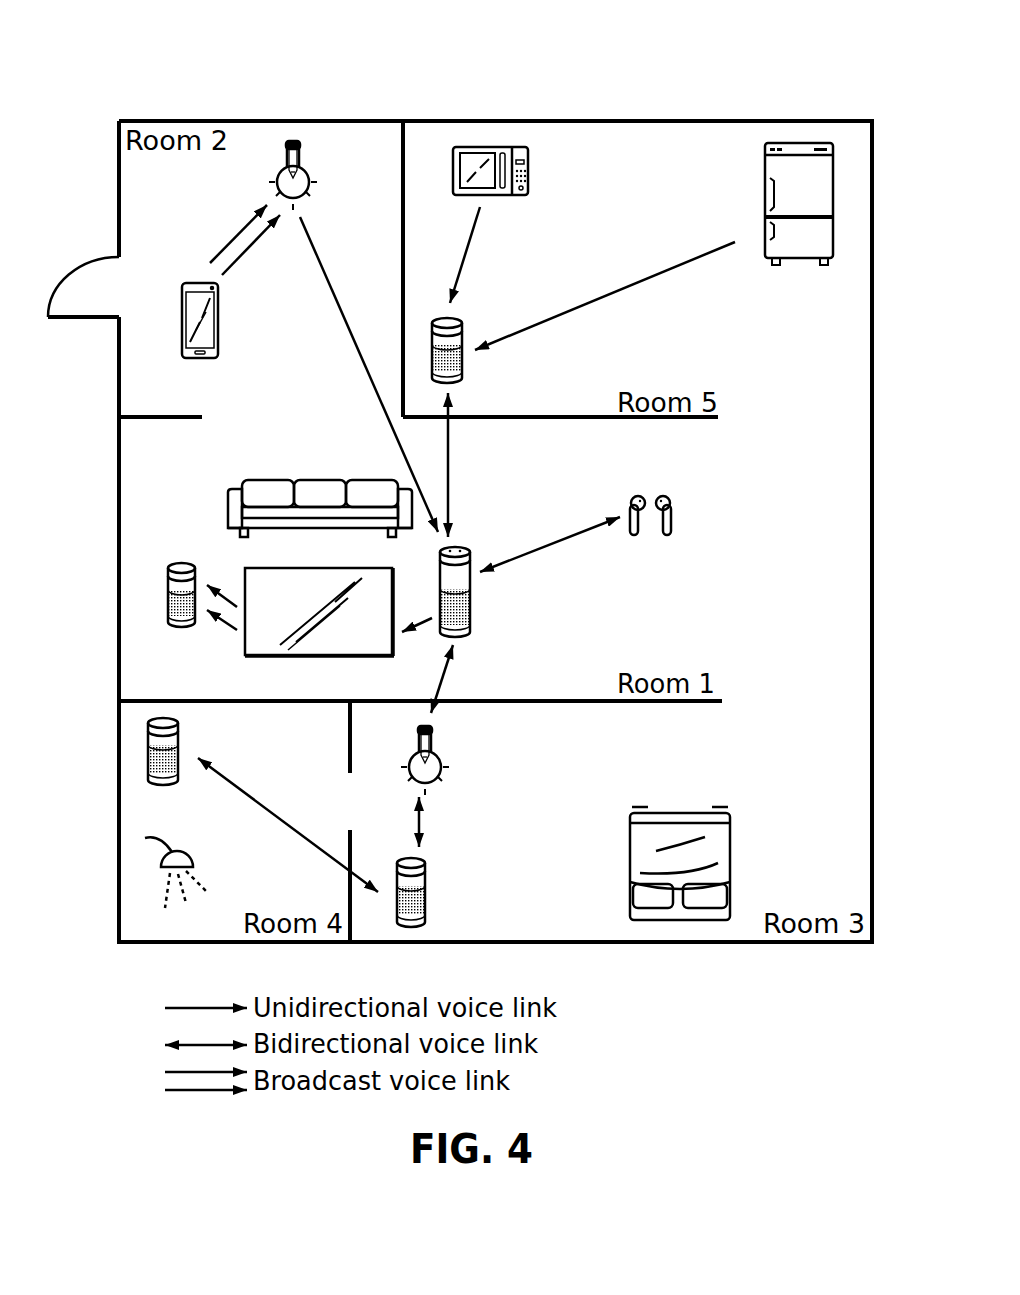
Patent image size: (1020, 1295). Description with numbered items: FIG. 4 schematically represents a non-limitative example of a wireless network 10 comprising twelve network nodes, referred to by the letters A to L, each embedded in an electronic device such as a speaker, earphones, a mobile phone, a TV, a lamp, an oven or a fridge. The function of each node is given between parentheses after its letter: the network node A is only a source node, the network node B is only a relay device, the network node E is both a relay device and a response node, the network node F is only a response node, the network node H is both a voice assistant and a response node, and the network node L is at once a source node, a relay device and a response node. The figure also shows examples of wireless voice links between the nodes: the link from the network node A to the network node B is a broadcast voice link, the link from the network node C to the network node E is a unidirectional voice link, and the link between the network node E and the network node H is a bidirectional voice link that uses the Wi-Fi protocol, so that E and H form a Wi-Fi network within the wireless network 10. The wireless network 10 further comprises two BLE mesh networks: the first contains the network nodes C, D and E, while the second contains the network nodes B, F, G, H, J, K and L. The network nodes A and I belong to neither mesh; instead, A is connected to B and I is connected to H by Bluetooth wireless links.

The wireless network 10 is at (655, 104).
The network node A is at (219, 344).
The network node B is at (306, 170).
The network node C is at (528, 170).
The network node D is at (805, 262).
The network node E is at (462, 363).
The network node F is at (181, 627).
The network node G is at (305, 656).
The network node H is at (470, 603).
The network node I is at (677, 520).
The network node J is at (180, 748).
The network node K is at (441, 752).
The network node L is at (425, 872).